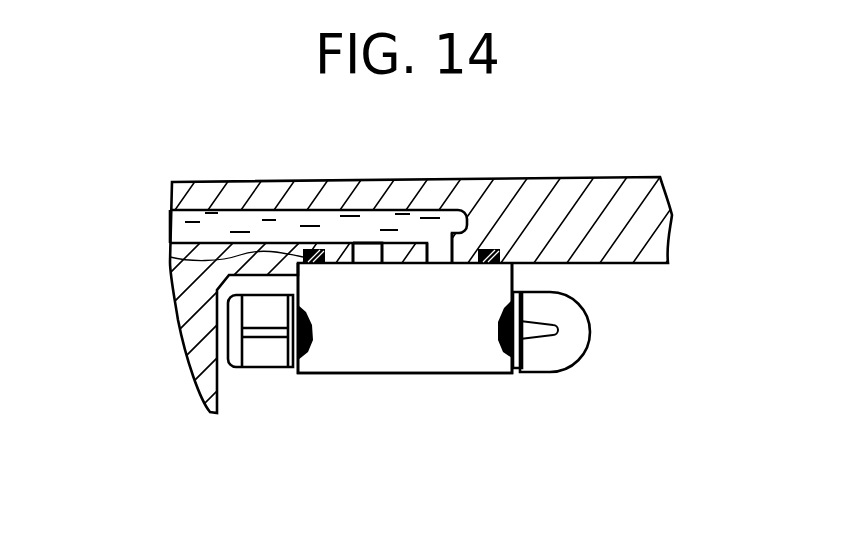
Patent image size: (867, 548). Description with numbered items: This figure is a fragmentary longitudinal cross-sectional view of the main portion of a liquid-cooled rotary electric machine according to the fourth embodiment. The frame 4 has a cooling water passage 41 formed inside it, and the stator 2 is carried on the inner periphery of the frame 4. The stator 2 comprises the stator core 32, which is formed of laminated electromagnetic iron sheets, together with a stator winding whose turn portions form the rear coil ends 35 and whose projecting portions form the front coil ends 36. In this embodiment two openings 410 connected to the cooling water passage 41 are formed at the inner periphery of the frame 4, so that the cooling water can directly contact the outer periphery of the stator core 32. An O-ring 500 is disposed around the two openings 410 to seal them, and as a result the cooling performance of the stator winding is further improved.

The stator 2 is at (570, 274).
The frame 4 is at (660, 220).
The stator core 32 is at (488, 360).
The rear coil ends 35 is at (267, 390).
The front coil ends 36 is at (583, 380).
The cooling water passage 41 is at (451, 227).
The openings 410 is at (373, 253).
The O-ring 500 is at (170, 257).